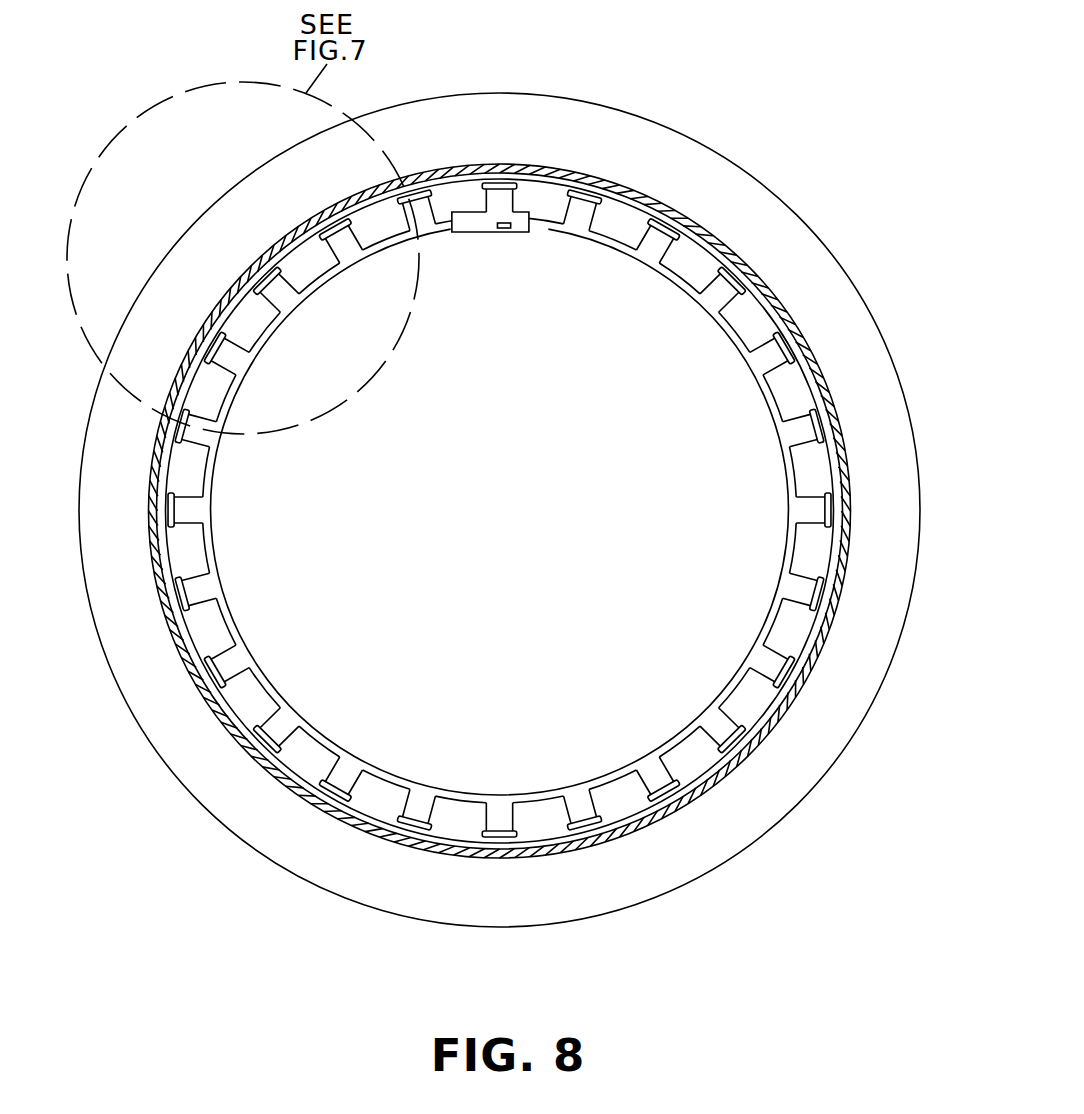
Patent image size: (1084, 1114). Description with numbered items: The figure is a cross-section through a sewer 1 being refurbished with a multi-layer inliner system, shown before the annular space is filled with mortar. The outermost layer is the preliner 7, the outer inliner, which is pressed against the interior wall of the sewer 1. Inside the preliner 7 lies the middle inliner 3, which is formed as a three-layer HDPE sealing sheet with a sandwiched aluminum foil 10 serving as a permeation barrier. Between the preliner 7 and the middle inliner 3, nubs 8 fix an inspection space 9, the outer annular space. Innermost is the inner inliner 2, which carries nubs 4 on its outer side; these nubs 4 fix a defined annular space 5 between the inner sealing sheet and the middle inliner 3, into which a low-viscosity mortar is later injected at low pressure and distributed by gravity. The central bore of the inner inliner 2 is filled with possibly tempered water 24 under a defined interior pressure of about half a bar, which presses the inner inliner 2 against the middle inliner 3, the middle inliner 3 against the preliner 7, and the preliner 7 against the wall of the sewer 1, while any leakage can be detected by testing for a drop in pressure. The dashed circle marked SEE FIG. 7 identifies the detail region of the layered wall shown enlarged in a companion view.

The sewer 1 is at (803, 272).
The inner inliner 2 is at (493, 512).
The middle inliner 3 is at (440, 836).
The nubs 4 is at (345, 778).
The annular space 5 is at (687, 765).
The preliner 7 is at (650, 827).
The nubs 8 is at (805, 342).
The inspection space 9 is at (760, 273).
The aluminum foil 10 is at (827, 403).
The water 24 is at (583, 611).